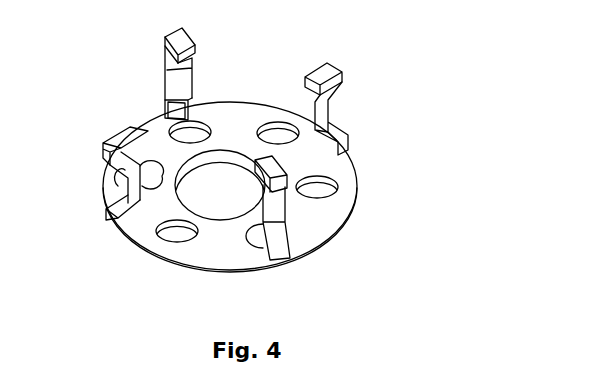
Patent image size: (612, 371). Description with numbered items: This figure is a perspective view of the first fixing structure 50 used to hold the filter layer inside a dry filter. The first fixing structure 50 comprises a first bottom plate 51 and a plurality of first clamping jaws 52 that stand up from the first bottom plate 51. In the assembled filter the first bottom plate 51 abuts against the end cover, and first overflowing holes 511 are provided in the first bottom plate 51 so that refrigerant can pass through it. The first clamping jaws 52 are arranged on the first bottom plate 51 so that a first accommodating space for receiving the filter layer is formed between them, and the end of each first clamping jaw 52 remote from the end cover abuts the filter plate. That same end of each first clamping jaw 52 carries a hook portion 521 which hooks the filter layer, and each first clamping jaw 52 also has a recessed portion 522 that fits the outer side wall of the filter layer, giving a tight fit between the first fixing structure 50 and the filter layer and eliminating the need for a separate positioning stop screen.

The first fixing structure 50 is at (221, 217).
The first bottom plate 51 is at (214, 217).
The first overflowing holes 511 is at (177, 235).
The first clamping jaws 52 is at (172, 88).
The hook portion 521 is at (322, 73).
The recessed portion 522 is at (328, 118).